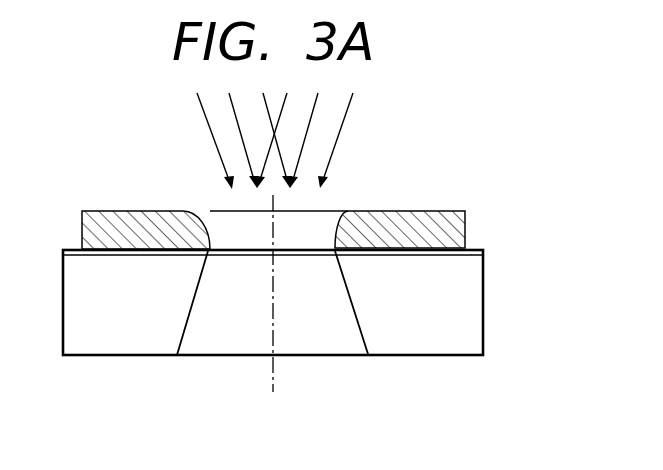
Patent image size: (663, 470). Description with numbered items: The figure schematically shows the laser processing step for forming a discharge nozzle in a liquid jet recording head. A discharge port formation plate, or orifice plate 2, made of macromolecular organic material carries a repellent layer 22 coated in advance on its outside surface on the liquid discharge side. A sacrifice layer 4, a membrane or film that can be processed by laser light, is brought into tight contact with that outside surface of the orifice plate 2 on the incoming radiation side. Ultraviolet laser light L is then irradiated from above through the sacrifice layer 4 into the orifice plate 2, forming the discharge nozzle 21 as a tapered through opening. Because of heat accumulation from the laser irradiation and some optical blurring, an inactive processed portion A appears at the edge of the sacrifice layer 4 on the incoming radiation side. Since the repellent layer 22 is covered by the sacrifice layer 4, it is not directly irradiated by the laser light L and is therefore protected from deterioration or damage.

The discharge port formation plate 2 is at (463, 343).
The discharge nozzle 21 is at (195, 343).
The repellent layer 22 is at (485, 250).
The sacrifice layer 4 is at (440, 211).
The laser light L is at (343, 118).
The inactive processed portion A is at (338, 218).